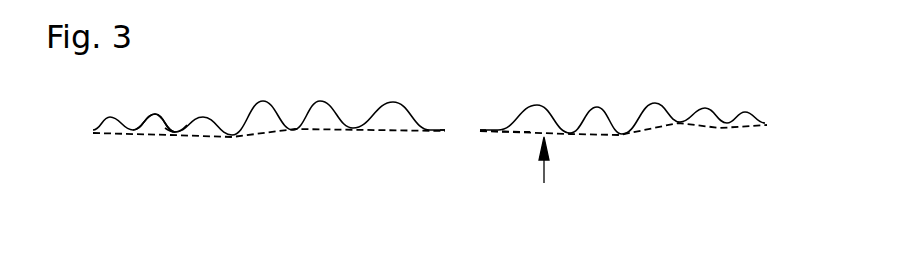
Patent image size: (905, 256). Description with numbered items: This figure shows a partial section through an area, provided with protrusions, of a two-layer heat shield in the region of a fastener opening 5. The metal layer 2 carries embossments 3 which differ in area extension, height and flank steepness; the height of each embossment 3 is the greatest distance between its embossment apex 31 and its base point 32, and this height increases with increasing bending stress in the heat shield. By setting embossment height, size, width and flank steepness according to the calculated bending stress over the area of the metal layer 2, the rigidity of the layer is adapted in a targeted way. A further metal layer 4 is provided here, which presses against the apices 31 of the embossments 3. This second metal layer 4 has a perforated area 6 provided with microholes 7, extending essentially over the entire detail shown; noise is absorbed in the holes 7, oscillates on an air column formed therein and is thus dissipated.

The metal layer 2 is at (762, 122).
The embossments 3 is at (302, 122).
The further metal layer 4 is at (657, 128).
The fastener opening 5 is at (461, 130).
The perforated area 6 is at (544, 170).
The microholes 7 is at (515, 133).
The embossment apex 31 is at (174, 132).
The base point 32 is at (153, 113).